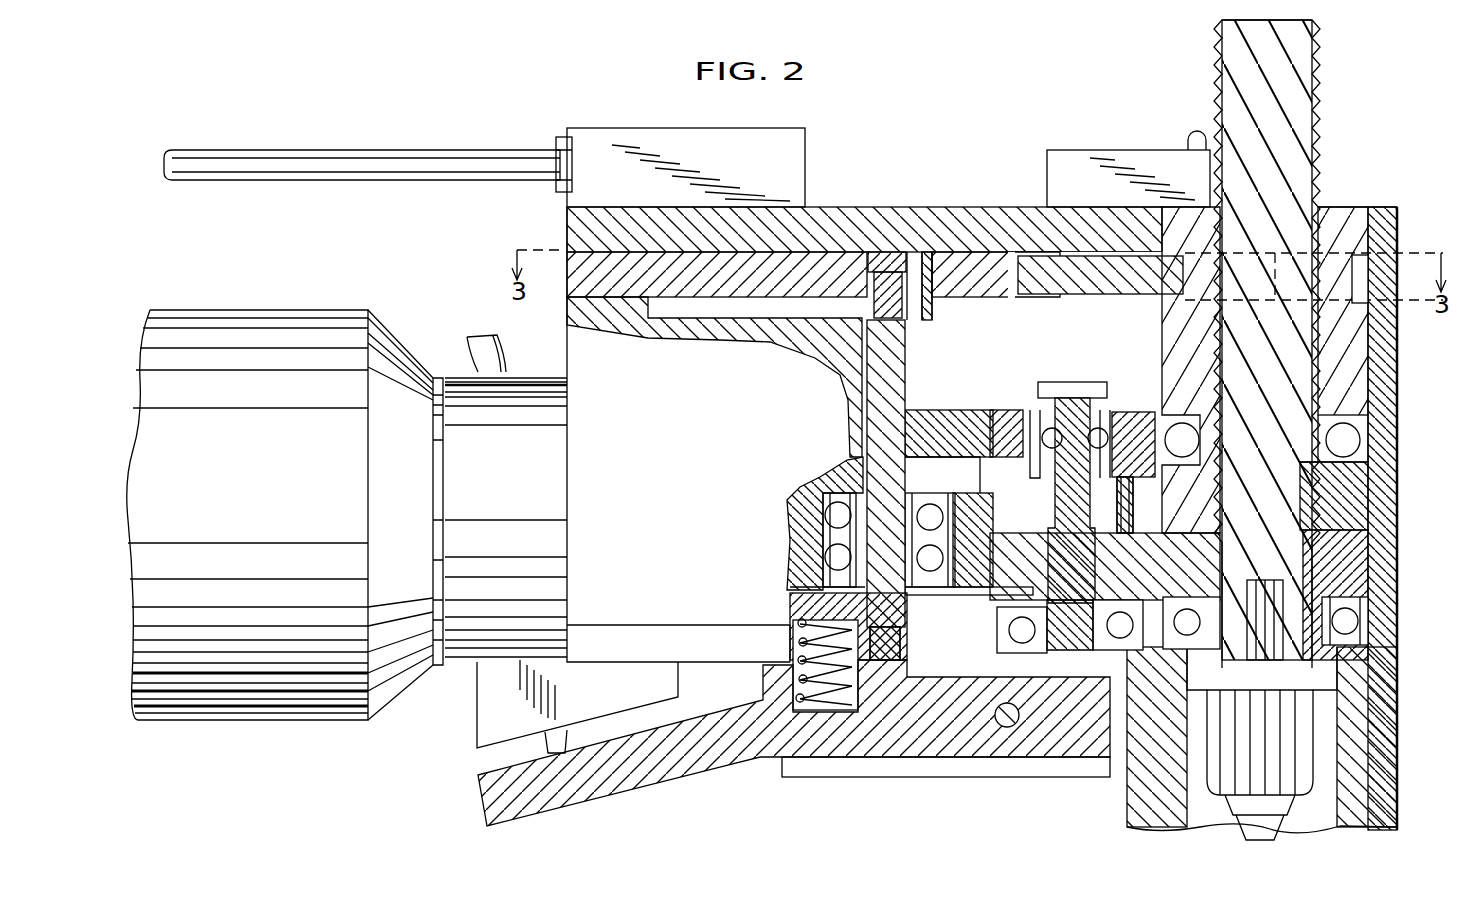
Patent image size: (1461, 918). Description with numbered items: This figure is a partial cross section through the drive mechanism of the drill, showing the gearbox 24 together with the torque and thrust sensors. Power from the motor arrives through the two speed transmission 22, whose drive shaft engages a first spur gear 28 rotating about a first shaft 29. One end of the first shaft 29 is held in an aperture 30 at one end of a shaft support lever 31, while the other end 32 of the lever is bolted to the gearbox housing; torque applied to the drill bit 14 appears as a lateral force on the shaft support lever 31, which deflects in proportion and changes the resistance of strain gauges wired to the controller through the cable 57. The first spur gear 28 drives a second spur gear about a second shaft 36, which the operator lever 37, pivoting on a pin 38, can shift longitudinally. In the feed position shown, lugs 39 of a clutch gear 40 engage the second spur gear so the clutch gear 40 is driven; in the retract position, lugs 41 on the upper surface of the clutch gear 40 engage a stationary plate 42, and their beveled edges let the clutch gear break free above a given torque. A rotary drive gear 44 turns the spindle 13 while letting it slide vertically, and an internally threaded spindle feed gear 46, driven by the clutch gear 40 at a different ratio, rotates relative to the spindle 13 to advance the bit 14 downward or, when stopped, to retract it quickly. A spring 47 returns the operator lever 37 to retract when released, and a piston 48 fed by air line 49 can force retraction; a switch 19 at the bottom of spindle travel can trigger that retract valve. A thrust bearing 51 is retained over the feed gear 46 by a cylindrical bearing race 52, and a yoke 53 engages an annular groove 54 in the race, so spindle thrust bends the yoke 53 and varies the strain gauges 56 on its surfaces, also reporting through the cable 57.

The spindle 13 is at (1312, 128).
The drill bit 14 is at (1270, 830).
The switch 19 is at (1150, 160).
The two speed transmission 22 is at (265, 330).
The gearbox 24 is at (1400, 194).
The first spur gear 28 is at (798, 552).
The first shaft 29 is at (874, 420).
The aperture 30 is at (888, 262).
The shaft support lever 31 is at (838, 268).
The other end of shaft support lever 32 is at (566, 290).
The second shaft 36 is at (1073, 415).
The operator lever 37 is at (672, 782).
The pin 38 is at (1007, 728).
The lugs 39 is at (1010, 530).
The clutch gear 40 is at (1010, 480).
The lugs 41 is at (1125, 477).
The stationary plate 42 is at (1115, 480).
The rotary drive gear 44 is at (1345, 568).
The spindle feed gear 46 is at (1345, 498).
The spring 47 is at (795, 680).
The piston 48 is at (478, 706).
The line 49 is at (480, 345).
The thrust bearing 51 is at (1352, 441).
The cylindrical bearing race 52 is at (1350, 372).
The yoke 53 is at (985, 265).
The annular groove 54 is at (1362, 285).
The strain gauges 56 is at (1060, 275).
The cable 57 is at (393, 170).